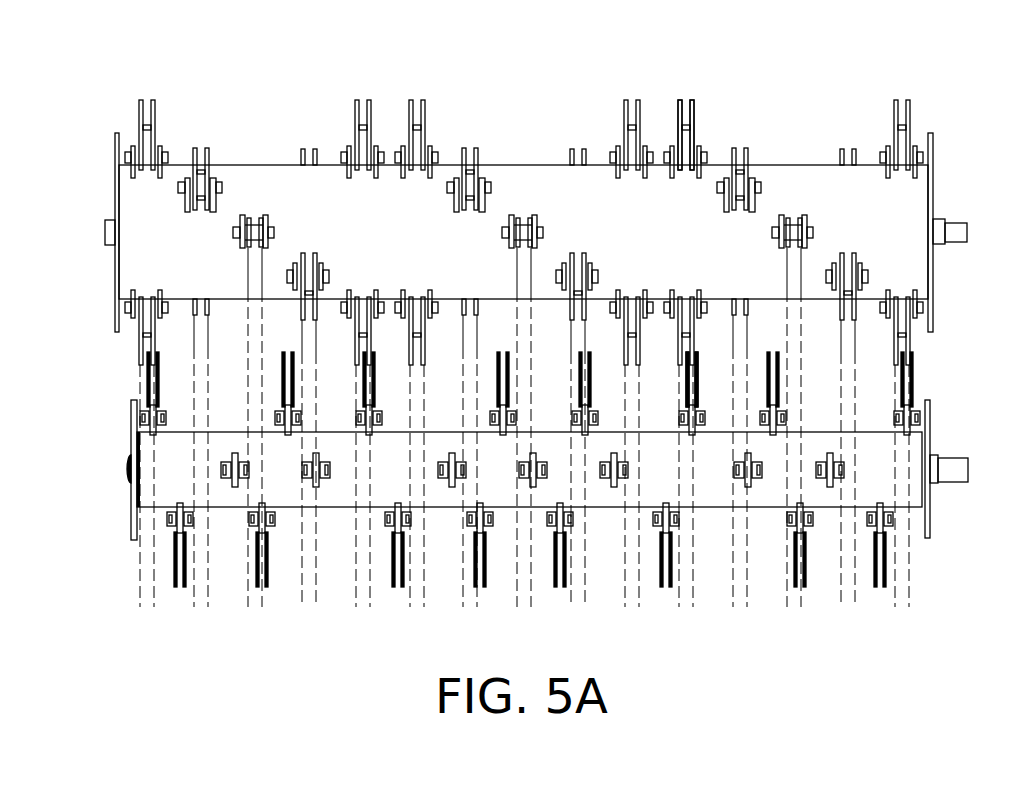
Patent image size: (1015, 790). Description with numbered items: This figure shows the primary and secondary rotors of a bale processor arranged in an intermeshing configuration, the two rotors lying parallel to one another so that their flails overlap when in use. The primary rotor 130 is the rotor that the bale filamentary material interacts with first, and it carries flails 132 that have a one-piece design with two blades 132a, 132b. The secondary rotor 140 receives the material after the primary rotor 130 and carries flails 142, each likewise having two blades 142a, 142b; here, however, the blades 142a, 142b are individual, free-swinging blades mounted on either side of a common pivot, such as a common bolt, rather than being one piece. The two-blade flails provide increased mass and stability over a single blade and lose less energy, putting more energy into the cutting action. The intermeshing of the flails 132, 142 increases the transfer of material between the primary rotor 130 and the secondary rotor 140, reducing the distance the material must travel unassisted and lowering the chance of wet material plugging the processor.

The primary rotor 130 is at (902, 197).
The flail 132 is at (712, 138).
The blade 132a is at (676, 110).
The blade 132b is at (695, 112).
The secondary rotor 140 is at (917, 447).
The flail 142 is at (717, 383).
The blade 142a is at (685, 389).
The blade 142b is at (685, 390).